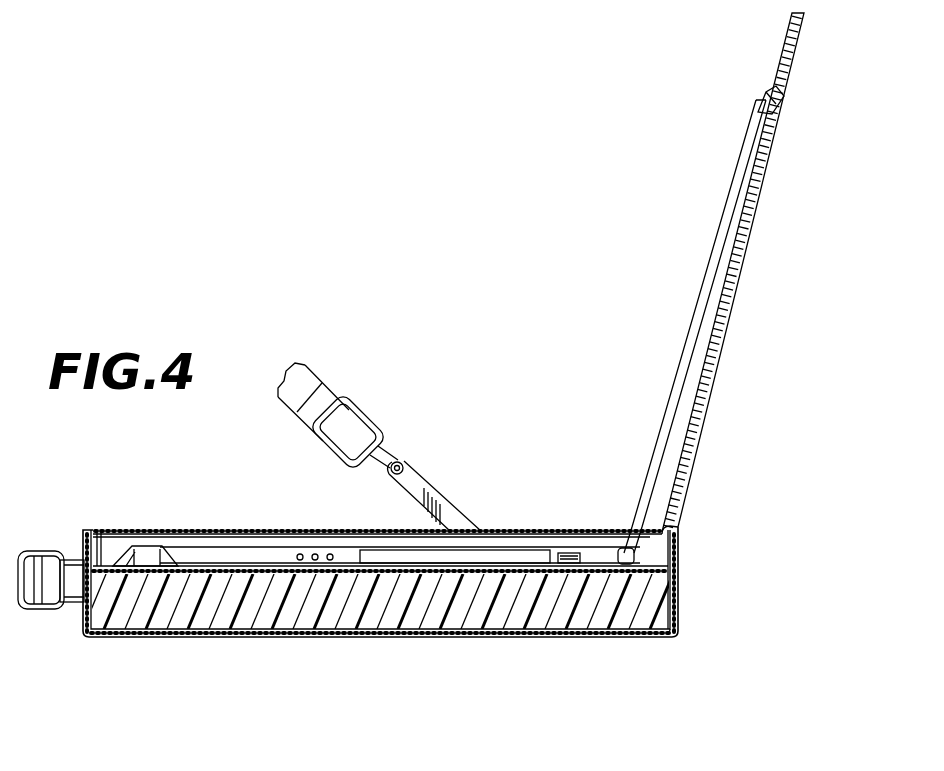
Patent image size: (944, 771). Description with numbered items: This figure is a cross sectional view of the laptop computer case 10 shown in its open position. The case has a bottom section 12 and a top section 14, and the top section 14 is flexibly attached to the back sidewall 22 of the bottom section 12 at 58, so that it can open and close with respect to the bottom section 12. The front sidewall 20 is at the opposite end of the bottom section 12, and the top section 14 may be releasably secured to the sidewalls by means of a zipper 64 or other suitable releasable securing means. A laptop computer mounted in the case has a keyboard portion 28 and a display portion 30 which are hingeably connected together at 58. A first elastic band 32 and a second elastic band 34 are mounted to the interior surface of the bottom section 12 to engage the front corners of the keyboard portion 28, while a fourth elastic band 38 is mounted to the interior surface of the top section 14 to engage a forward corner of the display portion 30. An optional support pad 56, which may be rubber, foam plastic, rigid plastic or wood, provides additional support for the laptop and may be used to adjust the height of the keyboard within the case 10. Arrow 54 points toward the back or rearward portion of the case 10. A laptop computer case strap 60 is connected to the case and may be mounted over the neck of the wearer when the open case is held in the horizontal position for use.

The laptop computer case 10 is at (682, 578).
The bottom section 12 is at (542, 638).
The top section 14 is at (724, 311).
The front sidewall 20 is at (81, 622).
The back sidewall 22 is at (680, 607).
The keyboard portion 28 is at (220, 547).
The display portion 30 is at (697, 306).
The first elastic band 32 is at (161, 8).
The second elastic band 34 is at (145, 545).
The fourth elastic band 38 is at (762, 104).
The arrow 54 is at (621, 8).
The support pad 56 is at (422, 612).
The flexible attachment 58 is at (678, 522).
The laptop computer case strap 60 is at (313, 373).
The zipper 64 is at (293, 530).